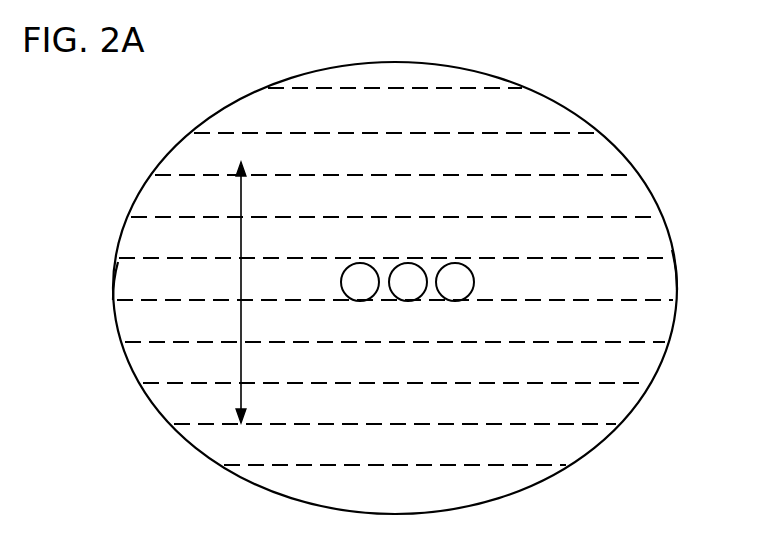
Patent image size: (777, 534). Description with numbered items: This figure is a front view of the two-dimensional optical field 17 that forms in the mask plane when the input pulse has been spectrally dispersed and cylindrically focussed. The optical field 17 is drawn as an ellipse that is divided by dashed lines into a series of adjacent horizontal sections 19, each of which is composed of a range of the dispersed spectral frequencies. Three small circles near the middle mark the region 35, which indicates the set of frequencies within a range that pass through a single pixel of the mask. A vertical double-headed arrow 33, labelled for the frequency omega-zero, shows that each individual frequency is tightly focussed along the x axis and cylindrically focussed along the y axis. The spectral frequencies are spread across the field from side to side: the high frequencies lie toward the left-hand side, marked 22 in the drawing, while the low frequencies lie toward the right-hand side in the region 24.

The optical field 17 is at (468, 68).
The horizontal sections 19 is at (572, 147).
The left edge region 22 is at (150, 280).
The region of low spectral frequencies 24 is at (660, 277).
The arrow 33 is at (242, 205).
The region 35 is at (363, 275).